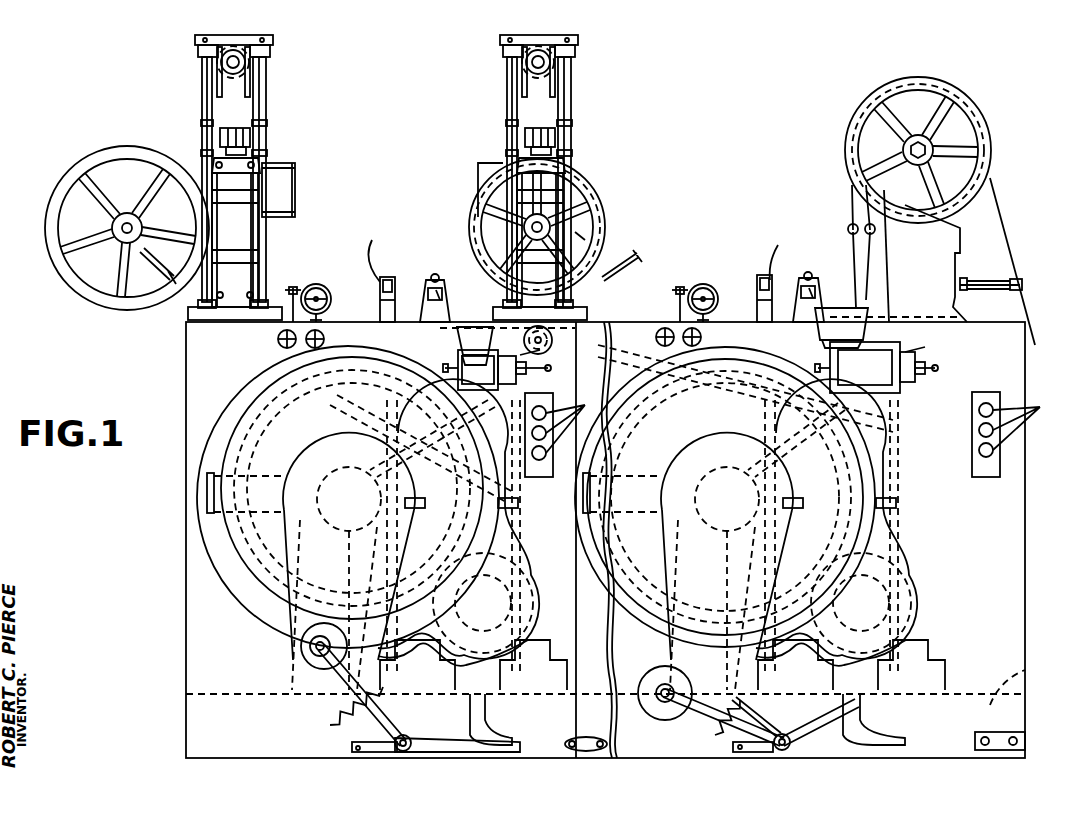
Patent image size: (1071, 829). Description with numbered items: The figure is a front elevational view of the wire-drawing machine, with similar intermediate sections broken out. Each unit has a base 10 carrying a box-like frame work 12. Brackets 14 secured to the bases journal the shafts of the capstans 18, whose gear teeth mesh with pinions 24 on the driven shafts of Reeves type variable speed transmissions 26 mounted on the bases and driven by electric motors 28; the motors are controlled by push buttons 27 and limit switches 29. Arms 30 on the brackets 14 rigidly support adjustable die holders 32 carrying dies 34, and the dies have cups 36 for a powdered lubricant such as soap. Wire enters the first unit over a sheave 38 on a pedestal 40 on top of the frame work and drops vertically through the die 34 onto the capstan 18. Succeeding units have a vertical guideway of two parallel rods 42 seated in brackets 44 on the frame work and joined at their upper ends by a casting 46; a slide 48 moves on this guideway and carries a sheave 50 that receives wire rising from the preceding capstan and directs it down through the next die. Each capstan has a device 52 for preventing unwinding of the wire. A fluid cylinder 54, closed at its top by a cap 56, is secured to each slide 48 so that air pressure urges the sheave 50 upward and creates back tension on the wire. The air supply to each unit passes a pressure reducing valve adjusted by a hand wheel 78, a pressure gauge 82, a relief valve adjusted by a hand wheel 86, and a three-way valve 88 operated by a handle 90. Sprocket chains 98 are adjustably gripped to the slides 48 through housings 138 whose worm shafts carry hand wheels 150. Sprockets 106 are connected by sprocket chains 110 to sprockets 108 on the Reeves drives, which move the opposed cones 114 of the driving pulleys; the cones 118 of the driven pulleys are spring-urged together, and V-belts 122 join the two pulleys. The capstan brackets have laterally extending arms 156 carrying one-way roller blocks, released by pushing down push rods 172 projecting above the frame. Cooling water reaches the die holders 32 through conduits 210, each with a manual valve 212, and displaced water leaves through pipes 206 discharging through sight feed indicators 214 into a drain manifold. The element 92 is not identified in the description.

The base 10 is at (1025, 668).
The frame work 12 is at (1025, 541).
The brackets 14 is at (300, 620).
The capstans 18 is at (215, 545).
The pinions 24 is at (500, 592).
The Reeves type variable speed transmissions 26 is at (535, 535).
The push buttons 27 is at (797, 432).
The electric motors 28 is at (390, 395).
The limit switches 29 is at (295, 182).
The arms 30 is at (395, 413).
The die holders 32 is at (462, 368).
The dies 34 is at (470, 352).
The cups 36 is at (480, 327).
The sheave 38 is at (985, 115).
The pedestal 40 is at (930, 237).
The rods 42 is at (202, 80).
The brackets 44 is at (190, 318).
The casting 46 is at (262, 36).
The slide 48 is at (240, 236).
The sheave 50 is at (52, 250).
The device for preventing unwinding 52 is at (345, 670).
The fluid cylinder 54 is at (215, 158).
The cap 56 is at (251, 136).
The hand wheel 78 is at (324, 339).
The pressure gauge 82 is at (326, 288).
The hand wheel 86 is at (278, 339).
The three-way valve 88 is at (583, 252).
The handle 90 is at (390, 278).
The bearing 92 is at (248, 64).
The sprocket chains 98 is at (217, 92).
The sprockets 106 is at (590, 314).
The sprockets 108 is at (607, 465).
The sprocket chains 110 is at (611, 423).
The cones 114 is at (936, 488).
The cones 118 is at (447, 670).
The V-belts 122 is at (375, 578).
The housings 138 is at (600, 220).
The hand wheels 150 is at (150, 275).
The arms 156 is at (265, 520).
The push rods 172 is at (293, 287).
The pipes 206 is at (434, 274).
The conduits 210 is at (540, 375).
The valve 212 is at (545, 355).
The sight feed indicators 214 is at (445, 290).